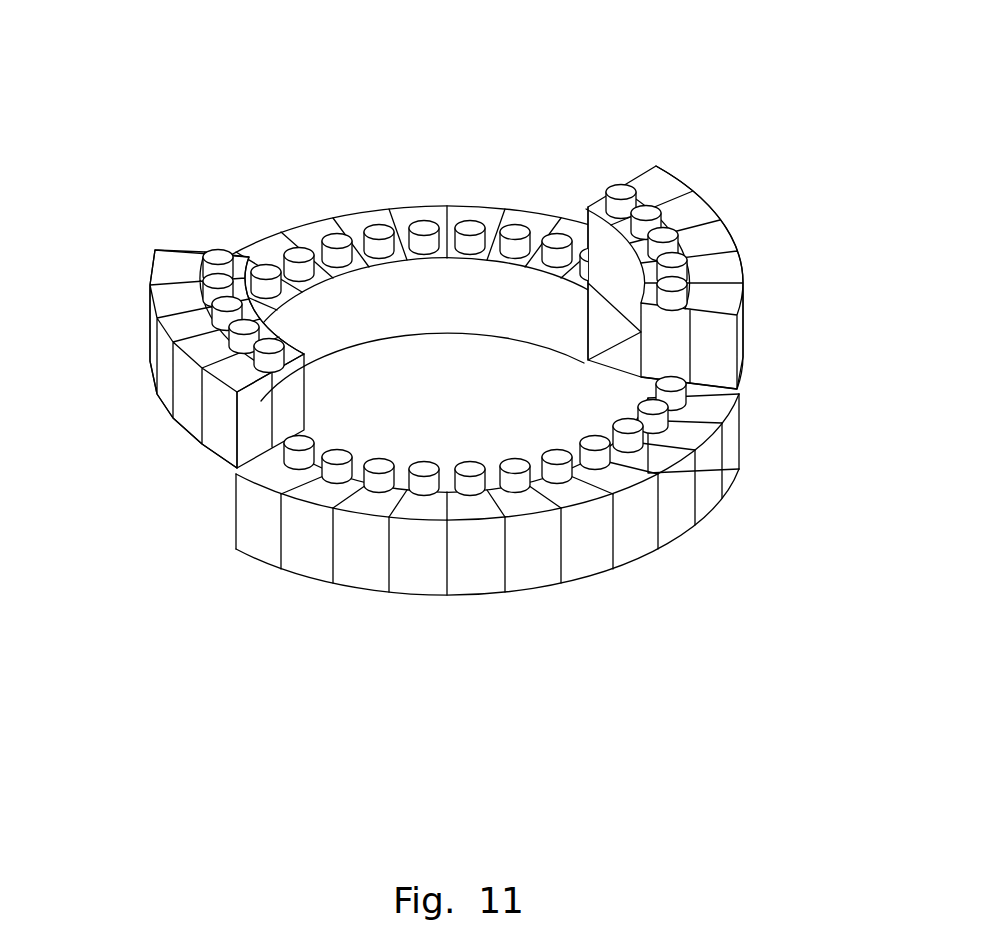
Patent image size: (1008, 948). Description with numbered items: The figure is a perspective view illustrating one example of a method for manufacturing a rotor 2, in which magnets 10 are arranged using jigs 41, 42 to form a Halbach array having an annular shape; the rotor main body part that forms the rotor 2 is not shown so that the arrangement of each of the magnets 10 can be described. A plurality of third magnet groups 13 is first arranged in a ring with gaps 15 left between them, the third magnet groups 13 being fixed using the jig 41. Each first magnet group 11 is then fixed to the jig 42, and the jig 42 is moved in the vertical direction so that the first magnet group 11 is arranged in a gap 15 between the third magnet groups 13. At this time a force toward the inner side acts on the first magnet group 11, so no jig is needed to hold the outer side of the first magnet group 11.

The rotor 2 is at (462, 381).
The magnet 10 is at (462, 386).
The first magnet group 11 is at (451, 326).
The third magnet group 13 is at (382, 146).
The gap 15 is at (165, 525).
The jig 41 is at (491, 226).
The jig 42 is at (298, 394).